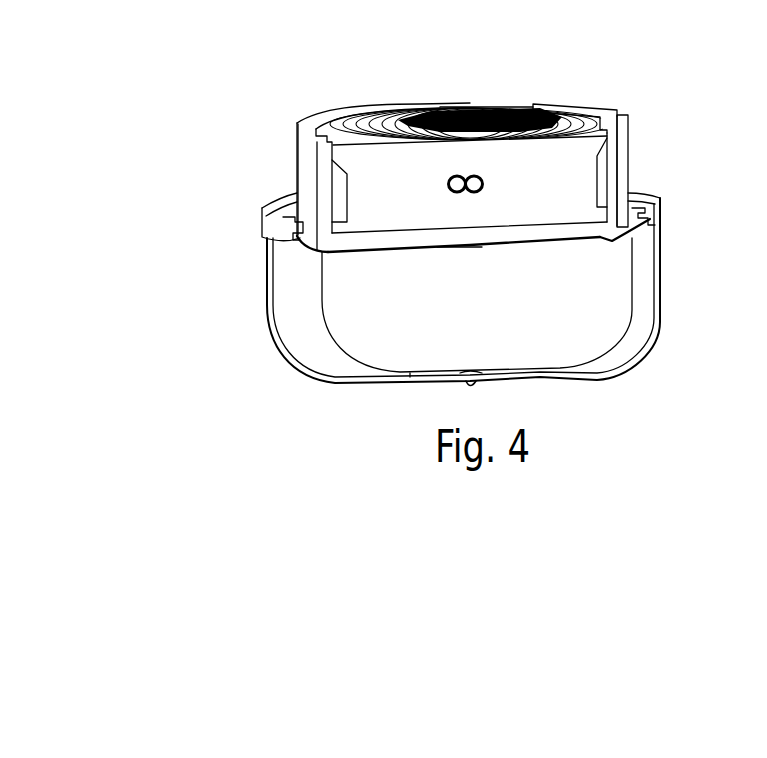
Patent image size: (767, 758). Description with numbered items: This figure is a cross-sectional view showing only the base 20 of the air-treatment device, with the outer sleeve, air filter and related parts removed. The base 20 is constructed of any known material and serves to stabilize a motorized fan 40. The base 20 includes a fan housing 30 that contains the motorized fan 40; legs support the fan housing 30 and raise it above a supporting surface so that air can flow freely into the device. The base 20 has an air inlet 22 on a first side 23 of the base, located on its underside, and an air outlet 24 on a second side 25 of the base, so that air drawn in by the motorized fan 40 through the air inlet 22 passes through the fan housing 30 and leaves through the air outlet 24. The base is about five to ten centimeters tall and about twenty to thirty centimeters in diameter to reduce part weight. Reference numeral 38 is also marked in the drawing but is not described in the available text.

The base 20 is at (648, 137).
The air inlet 22 is at (434, 254).
The first side 23 is at (448, 255).
The air outlet 24 is at (468, 112).
The second side 25 is at (488, 117).
The fan housing 30 is at (385, 158).
The motorized fan 40 is at (448, 181).
The component 38 is at (766, 33).